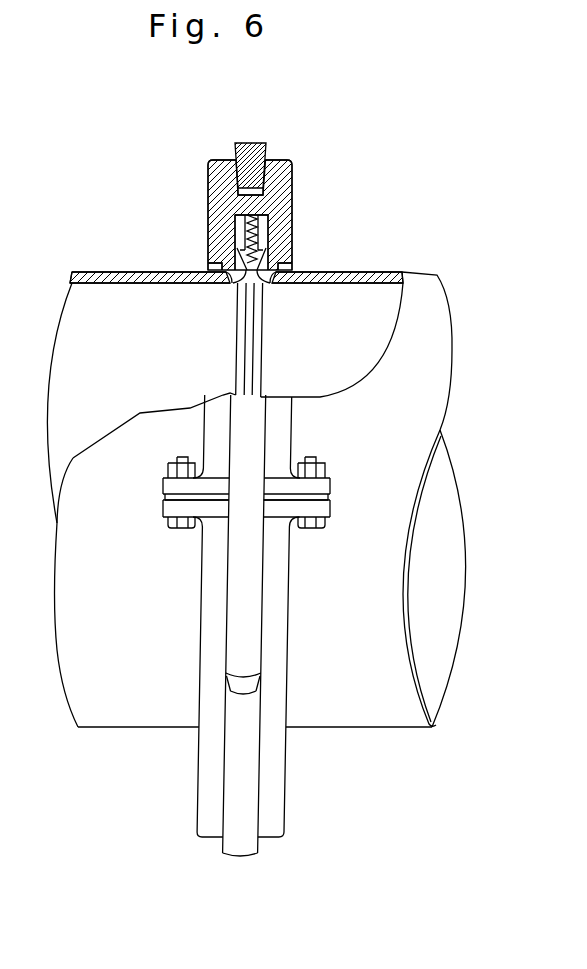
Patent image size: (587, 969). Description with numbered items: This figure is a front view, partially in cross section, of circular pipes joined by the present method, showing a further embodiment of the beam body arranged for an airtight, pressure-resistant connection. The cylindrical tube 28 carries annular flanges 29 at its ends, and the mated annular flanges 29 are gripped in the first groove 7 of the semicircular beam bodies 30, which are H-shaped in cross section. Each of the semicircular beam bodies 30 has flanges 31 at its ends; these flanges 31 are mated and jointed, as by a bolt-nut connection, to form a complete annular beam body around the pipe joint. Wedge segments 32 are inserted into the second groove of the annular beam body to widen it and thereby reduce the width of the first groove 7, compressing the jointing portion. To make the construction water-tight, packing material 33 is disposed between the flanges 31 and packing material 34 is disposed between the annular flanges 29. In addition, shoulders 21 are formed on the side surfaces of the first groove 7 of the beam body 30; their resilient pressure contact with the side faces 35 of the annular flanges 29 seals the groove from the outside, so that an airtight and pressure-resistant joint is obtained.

The first groove 7 is at (292, 197).
The shoulders 21 is at (237, 233).
The cylindrical tube 28 is at (430, 333).
The annular flanges 29 is at (238, 247).
The semicircular beam bodies 30 is at (212, 628).
The flanges of the beam bodies 31 is at (163, 505).
The wedge segments 32 is at (250, 148).
The packing material 33 is at (200, 527).
The packing material 34 is at (267, 226).
The side faces of the flanges 35 is at (268, 243).